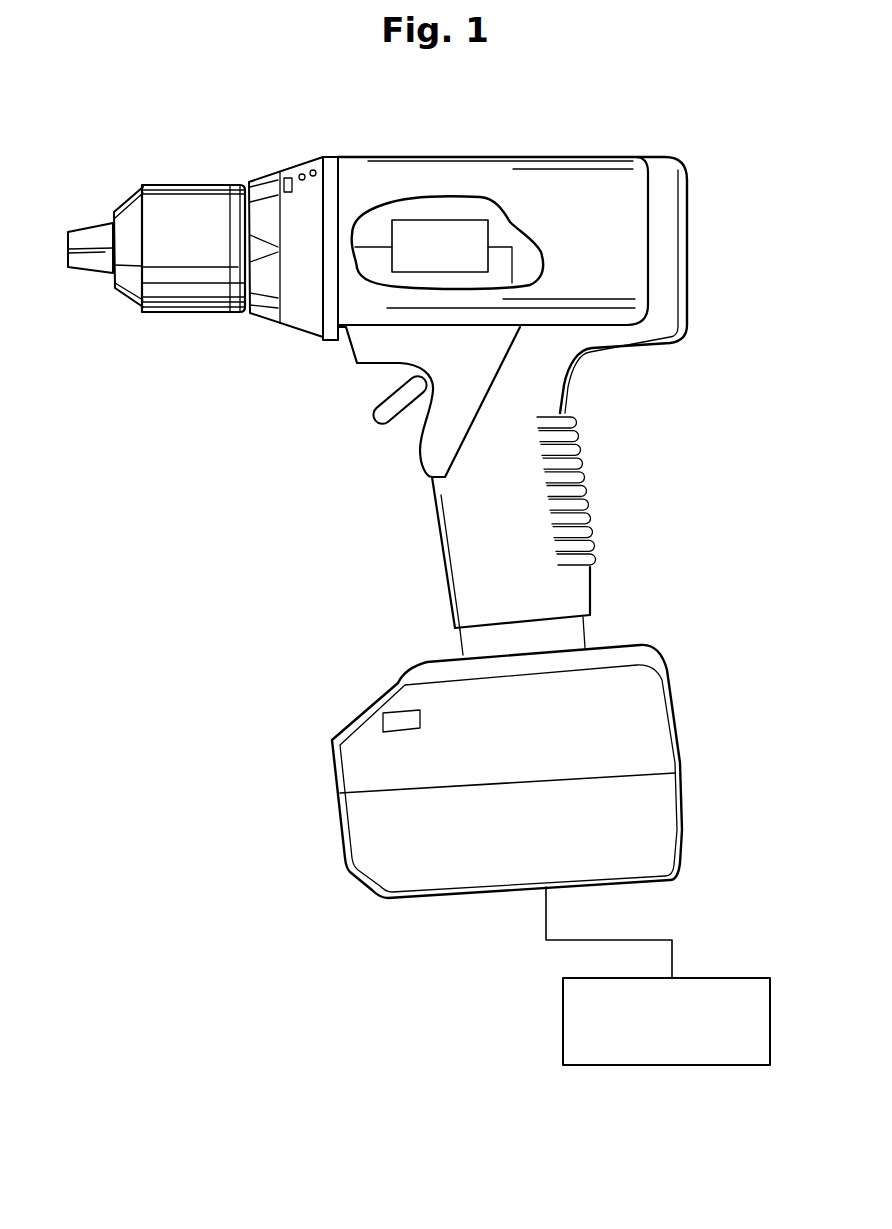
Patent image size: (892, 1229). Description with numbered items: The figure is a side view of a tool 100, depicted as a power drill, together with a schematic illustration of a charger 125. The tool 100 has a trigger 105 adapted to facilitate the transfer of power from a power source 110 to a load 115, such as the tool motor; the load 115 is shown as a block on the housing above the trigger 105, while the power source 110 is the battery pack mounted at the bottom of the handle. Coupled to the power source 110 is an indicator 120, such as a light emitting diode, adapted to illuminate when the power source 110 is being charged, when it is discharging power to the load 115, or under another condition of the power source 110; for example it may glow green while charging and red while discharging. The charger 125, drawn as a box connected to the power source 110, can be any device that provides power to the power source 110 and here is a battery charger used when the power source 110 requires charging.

The tool 100 is at (112, 168).
The trigger 105 is at (333, 438).
The power source 110 is at (680, 725).
The load 115 is at (455, 197).
The indicator 120 is at (400, 715).
The charger 125 is at (563, 1016).